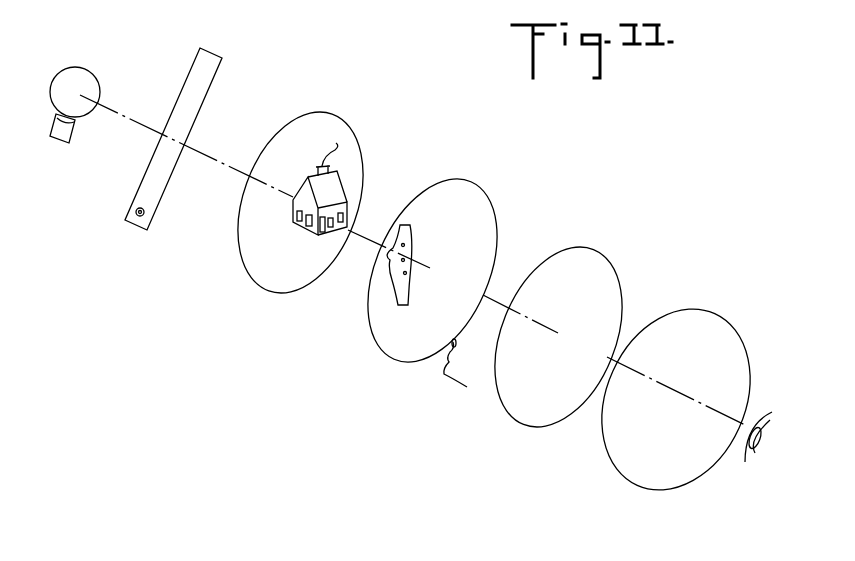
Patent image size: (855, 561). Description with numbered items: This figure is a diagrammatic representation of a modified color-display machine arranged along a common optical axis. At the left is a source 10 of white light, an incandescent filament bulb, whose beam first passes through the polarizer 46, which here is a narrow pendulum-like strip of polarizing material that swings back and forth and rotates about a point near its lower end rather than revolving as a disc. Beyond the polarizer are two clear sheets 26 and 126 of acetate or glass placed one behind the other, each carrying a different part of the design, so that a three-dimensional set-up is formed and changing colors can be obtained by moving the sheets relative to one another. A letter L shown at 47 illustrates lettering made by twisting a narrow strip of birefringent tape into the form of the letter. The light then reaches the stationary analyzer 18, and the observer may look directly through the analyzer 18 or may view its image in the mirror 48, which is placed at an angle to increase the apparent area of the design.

The source of white light 10 is at (87, 78).
The polarizer 46 is at (207, 75).
The sheet 26 is at (323, 125).
The sheet 126 is at (462, 192).
The analyzer 18 is at (600, 270).
The mirror 48 is at (705, 325).
The letter L 47 is at (467, 387).